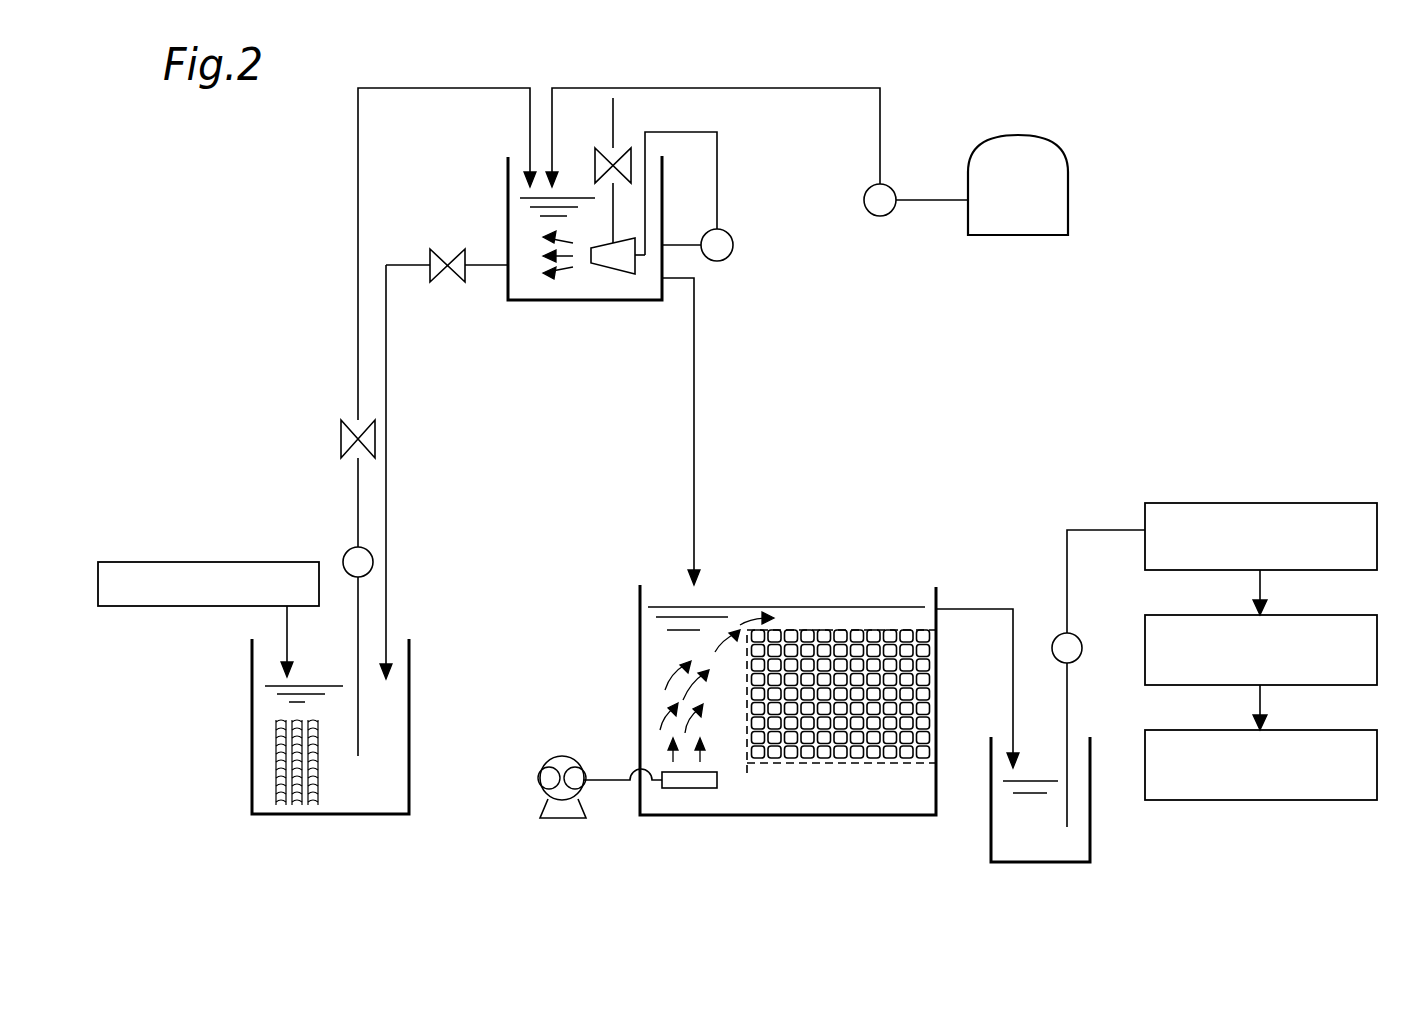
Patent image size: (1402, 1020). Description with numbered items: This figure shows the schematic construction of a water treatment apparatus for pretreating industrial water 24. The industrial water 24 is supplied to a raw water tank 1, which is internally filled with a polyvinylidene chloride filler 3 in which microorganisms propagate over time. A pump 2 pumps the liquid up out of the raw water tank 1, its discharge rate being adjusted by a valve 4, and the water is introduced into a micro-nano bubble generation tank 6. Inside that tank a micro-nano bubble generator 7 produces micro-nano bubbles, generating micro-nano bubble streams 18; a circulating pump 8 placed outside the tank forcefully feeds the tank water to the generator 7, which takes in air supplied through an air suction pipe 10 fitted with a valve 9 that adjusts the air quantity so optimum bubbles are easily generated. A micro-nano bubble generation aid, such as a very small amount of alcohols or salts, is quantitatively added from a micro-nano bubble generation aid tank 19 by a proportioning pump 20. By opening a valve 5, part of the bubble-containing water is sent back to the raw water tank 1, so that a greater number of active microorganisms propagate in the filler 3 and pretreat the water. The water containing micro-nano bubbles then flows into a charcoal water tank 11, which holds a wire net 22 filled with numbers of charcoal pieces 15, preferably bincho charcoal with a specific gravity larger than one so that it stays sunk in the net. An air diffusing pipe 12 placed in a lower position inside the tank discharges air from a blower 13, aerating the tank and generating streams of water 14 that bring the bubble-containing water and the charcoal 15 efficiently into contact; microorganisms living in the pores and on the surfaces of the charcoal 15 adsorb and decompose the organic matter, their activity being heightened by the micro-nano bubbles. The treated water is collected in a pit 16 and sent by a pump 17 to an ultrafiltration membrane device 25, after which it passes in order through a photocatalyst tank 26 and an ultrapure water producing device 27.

The raw water tank 1 is at (252, 776).
The pump 2 is at (345, 555).
The polyvinylidene chloride filler 3 is at (322, 780).
The valve 4 is at (352, 418).
The valve 5 is at (438, 285).
The micro-nano bubble generation tank 6 is at (545, 303).
The micro-nano bubble generator 7 is at (626, 275).
The circulating pump 8 is at (734, 252).
The valve 9 is at (605, 175).
The air suction pipe 10 is at (613, 118).
The charcoal water tank 11 is at (640, 640).
The air diffusing pipe 12 is at (700, 790).
The blower 13 is at (540, 776).
The streams of water 14 is at (690, 724).
The charcoal pieces 15 is at (845, 630).
The pit 16 is at (991, 852).
The pump 17 is at (1082, 636).
The micro-nano bubble streams 18 is at (556, 255).
The micro-nano bubble generation aid tank 19 is at (1068, 178).
The proportioning pump 20 is at (880, 218).
The wire net 22 is at (787, 765).
The industrial water 24 is at (176, 560).
The ultrafiltration membrane device 25 is at (1323, 503).
The photocatalyst tank 26 is at (1310, 615).
The ultrapure water producing device 27 is at (1310, 730).